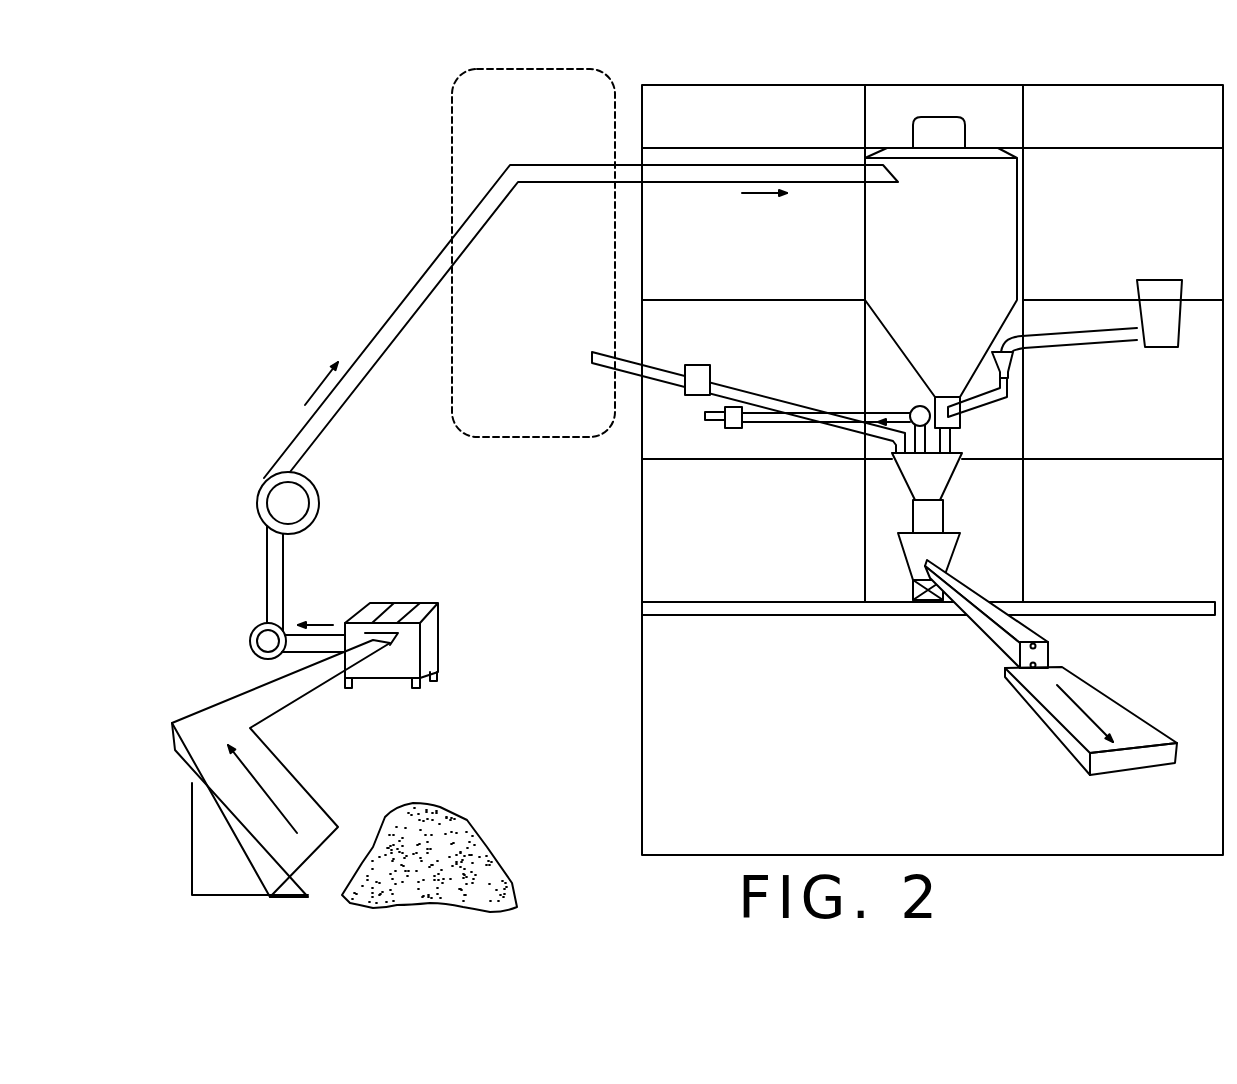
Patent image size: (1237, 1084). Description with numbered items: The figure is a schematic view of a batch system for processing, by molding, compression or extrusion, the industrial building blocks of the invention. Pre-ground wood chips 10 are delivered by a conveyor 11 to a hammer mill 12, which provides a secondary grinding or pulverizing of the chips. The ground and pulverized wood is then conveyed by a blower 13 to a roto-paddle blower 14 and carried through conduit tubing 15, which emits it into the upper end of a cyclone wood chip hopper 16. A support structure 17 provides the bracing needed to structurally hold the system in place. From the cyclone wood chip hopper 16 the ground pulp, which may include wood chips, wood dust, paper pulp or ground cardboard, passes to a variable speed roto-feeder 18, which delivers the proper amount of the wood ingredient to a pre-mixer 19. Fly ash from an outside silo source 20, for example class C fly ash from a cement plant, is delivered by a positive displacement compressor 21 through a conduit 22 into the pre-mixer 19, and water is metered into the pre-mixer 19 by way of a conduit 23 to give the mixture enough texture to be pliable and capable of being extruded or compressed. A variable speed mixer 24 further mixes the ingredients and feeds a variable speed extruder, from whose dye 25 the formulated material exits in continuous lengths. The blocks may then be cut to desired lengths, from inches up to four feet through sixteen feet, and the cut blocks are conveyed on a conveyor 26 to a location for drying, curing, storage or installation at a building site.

The pre-ground wood chips 10 is at (482, 823).
The conveyor 11 is at (303, 728).
The hammer mill 12 is at (440, 615).
The blower 13 is at (287, 605).
The roto-paddle blower 14 is at (257, 505).
The conduit tubing 15 is at (366, 378).
The cyclone wood chip hopper 16 is at (864, 214).
The support structure 17 is at (1025, 190).
The variable speed roto-feeder 18 is at (962, 418).
The pre-mixer 19 is at (950, 478).
The outside silo source 20 is at (452, 176).
The positive displacement compressor 21 is at (700, 363).
The conduit 22 is at (760, 385).
The conduit 23 is at (778, 424).
The variable speed mixer 24 is at (913, 518).
The extruder dye 25 is at (1040, 632).
The conveyor 26 is at (1120, 703).